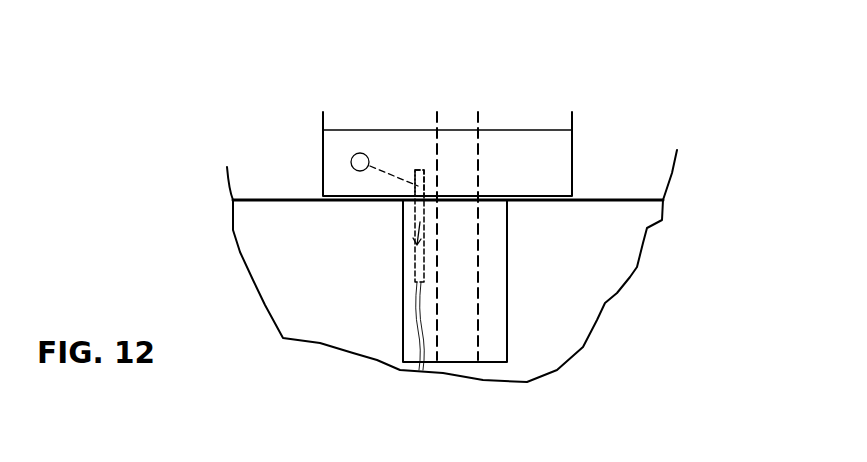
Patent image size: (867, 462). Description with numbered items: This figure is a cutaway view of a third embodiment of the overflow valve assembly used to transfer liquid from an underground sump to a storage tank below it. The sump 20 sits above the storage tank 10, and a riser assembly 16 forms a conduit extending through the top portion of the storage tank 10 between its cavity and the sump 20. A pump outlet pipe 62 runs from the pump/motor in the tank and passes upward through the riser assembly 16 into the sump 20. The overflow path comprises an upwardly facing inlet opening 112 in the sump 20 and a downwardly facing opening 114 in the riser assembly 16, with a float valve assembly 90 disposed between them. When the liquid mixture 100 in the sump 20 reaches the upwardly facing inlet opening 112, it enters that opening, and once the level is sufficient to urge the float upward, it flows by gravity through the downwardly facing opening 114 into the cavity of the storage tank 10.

The storage tank 10 is at (640, 198).
The sump 20 is at (573, 166).
The liquid mixture 100 is at (542, 130).
The riser assembly 16 is at (507, 328).
The pump outlet pipe 62 is at (478, 267).
The downwardly facing opening 114 is at (417, 280).
The float valve assembly 90 is at (388, 170).
The upwardly facing inlet opening 112 is at (420, 172).